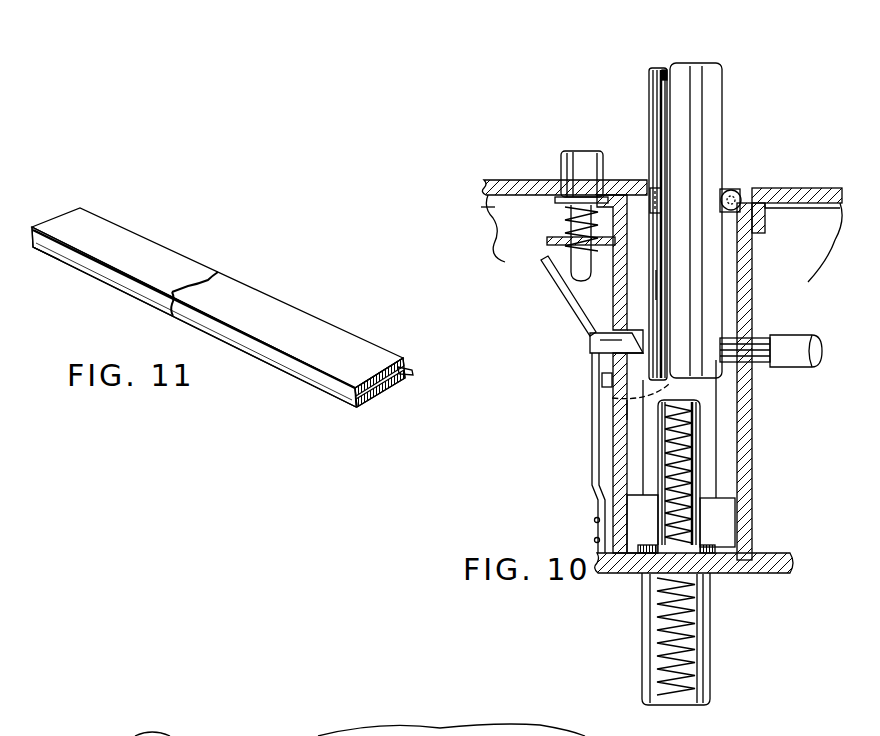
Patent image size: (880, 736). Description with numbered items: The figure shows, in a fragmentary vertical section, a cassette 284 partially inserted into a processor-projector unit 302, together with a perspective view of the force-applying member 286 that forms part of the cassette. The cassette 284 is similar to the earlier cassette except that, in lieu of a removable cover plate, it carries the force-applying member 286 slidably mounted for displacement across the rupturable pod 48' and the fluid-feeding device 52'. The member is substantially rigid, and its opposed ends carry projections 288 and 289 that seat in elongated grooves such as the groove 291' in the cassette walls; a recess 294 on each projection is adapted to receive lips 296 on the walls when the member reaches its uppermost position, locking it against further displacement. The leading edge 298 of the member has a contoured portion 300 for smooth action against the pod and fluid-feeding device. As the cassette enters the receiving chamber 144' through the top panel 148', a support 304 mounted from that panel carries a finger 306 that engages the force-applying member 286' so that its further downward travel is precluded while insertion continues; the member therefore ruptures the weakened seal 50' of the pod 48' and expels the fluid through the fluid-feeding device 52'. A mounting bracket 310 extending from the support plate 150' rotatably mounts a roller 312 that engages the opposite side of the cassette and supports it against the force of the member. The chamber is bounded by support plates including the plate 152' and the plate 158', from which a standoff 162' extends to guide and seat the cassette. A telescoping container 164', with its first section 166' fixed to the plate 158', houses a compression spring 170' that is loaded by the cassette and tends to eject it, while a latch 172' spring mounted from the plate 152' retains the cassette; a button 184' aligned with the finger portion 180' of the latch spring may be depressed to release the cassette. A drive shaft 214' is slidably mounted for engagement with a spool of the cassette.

In FIG. 10, the cassette 284 is at (727, 61).
In FIG. 10, the lips 296 is at (655, 82).
In FIG. 10, the fluid-feeding device 52' is at (632, 224).
In FIG. 10, the weakened seal 50' is at (629, 224).
In FIG. 11, the contoured portion 300 is at (275, 362).
In FIG. 10, the contoured portion 300 is at (657, 173).
In FIG. 11, the force-applying member 286 is at (217, 298).
In FIG. 10, the force-applying member 286 is at (635, 224).
In FIG. 10, the processor-projector unit 302 is at (503, 176).
In FIG. 10, the button 184' is at (570, 197).
In FIG. 10, the top panel 148' is at (564, 169).
In FIG. 10, the roller 312 is at (735, 193).
In FIG. 10, the mounting bracket 310 is at (750, 190).
In FIG. 10, the support 304 is at (552, 240).
In FIG. 10, the finger 306 is at (548, 244).
In FIG. 10, the rupturable pod 48' is at (549, 296).
In FIG. 10, the finger portion 180' is at (581, 302).
In FIG. 10, the support plate 150' is at (771, 381).
In FIG. 10, the drive shaft 214' is at (790, 341).
In FIG. 10, the latch 172' is at (589, 347).
In FIG. 10, the support plate 152' is at (570, 453).
In FIG. 10, the elongated groove 291' is at (593, 393).
In FIG. 10, the force-applying member 286' is at (585, 410).
In FIG. 10, the receiving chamber 144' is at (597, 466).
In FIG. 10, the telescoping container 164' is at (621, 472).
In FIG. 10, the standoff 162' is at (757, 453).
In FIG. 10, the support plate 158' is at (707, 548).
In FIG. 10, the first section 166' is at (645, 639).
In FIG. 10, the compression spring 170' is at (648, 636).
In FIG. 11, the projection 288 is at (53, 213).
In FIG. 11, the leading edge 298 is at (292, 362).
In FIG. 11, the recess 294 is at (383, 367).
In FIG. 11, the projection 289 is at (413, 373).